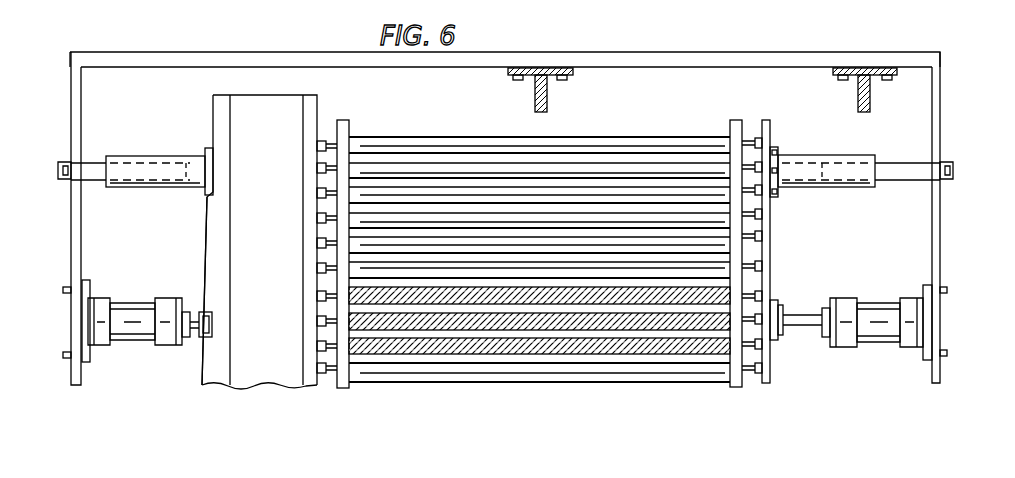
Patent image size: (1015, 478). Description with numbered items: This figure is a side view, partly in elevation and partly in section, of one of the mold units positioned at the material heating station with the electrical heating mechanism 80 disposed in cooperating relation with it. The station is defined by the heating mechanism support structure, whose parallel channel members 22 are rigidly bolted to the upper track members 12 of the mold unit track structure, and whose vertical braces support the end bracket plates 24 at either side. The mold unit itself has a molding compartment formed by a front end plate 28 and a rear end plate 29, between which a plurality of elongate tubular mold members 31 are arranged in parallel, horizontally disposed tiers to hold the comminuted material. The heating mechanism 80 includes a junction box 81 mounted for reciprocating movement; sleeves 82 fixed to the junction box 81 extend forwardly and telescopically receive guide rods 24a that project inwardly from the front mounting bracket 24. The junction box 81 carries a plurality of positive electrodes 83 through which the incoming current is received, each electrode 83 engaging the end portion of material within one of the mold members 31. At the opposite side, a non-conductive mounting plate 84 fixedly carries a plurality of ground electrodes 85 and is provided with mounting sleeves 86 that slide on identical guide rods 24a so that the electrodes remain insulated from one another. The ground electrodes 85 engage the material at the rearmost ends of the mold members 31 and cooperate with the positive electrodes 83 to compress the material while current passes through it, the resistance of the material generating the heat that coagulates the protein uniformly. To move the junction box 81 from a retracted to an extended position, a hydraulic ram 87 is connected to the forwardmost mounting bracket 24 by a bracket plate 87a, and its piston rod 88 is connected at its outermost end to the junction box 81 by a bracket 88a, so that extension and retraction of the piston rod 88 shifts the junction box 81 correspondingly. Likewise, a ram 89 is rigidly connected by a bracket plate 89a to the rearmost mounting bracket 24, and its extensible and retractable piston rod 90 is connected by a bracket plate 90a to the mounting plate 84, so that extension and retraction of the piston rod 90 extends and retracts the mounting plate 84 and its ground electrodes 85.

The channel members 22 is at (683, 56).
The end bracket plates 24 is at (73, 131).
The guide rods 24a is at (92, 163).
The upper track members 12 is at (549, 96).
The front end plate 28 is at (343, 120).
The rear end plate 29 is at (732, 128).
The tubular mold members 31 is at (484, 172).
The heating mechanism 80 is at (188, 105).
The junction box 81 is at (272, 240).
The sleeves 82 is at (160, 188).
The positive electrodes 83 is at (330, 168).
The mounting plate 84 is at (770, 128).
The ground electrodes 85 is at (750, 138).
The mounting sleeves 86 is at (816, 188).
The hydraulic ram 87 is at (143, 337).
The bracket plate 87a is at (83, 283).
The piston rod 88 is at (196, 328).
The bracket 88a is at (204, 255).
The ram 89 is at (880, 340).
The bracket plate 89a is at (928, 291).
The piston rod 90 is at (802, 326).
The bracket plate 90a is at (775, 301).